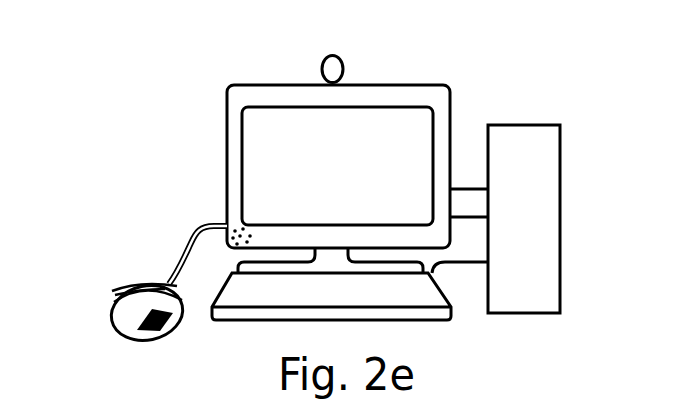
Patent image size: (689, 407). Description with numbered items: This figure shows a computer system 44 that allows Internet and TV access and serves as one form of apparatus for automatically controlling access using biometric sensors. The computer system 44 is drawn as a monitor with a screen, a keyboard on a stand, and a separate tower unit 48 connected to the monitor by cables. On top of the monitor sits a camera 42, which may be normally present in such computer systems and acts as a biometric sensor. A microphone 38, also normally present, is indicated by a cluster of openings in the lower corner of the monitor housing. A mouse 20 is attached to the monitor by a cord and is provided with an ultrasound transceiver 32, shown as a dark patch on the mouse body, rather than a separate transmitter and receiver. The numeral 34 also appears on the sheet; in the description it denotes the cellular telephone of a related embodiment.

The mouse 20 is at (130, 338).
The mouse button 32 is at (163, 334).
The computer system 34 is at (200, 131).
The connection port 38 is at (234, 228).
The camera 42 is at (341, 60).
The computer 44 is at (264, 76).
The computer tower 48 is at (569, 266).